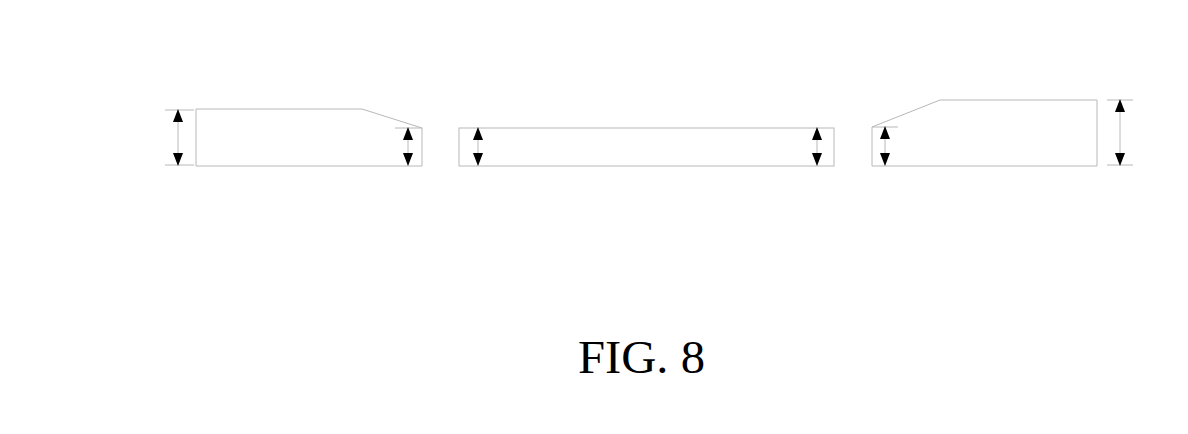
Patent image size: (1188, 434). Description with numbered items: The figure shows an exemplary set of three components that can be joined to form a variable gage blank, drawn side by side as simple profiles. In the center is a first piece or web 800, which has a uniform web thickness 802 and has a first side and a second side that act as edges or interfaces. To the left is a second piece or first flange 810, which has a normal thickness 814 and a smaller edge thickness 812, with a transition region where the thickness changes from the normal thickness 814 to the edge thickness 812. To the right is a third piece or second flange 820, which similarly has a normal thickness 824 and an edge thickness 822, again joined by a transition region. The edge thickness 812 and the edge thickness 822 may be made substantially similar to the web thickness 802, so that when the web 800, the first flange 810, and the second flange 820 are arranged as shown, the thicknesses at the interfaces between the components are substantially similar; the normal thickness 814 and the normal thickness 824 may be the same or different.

The web 800 is at (661, 128).
The thickness of the web 802 is at (647, 146).
The first flange 810 is at (342, 110).
The thickness at the edge of the first flange 812 is at (394, 146).
The normal thickness of the first flange 814 is at (165, 137).
The second flange 820 is at (988, 100).
The thickness at the edge of the second flange 822 is at (902, 146).
The normal thickness of the second flange 824 is at (1137, 132).